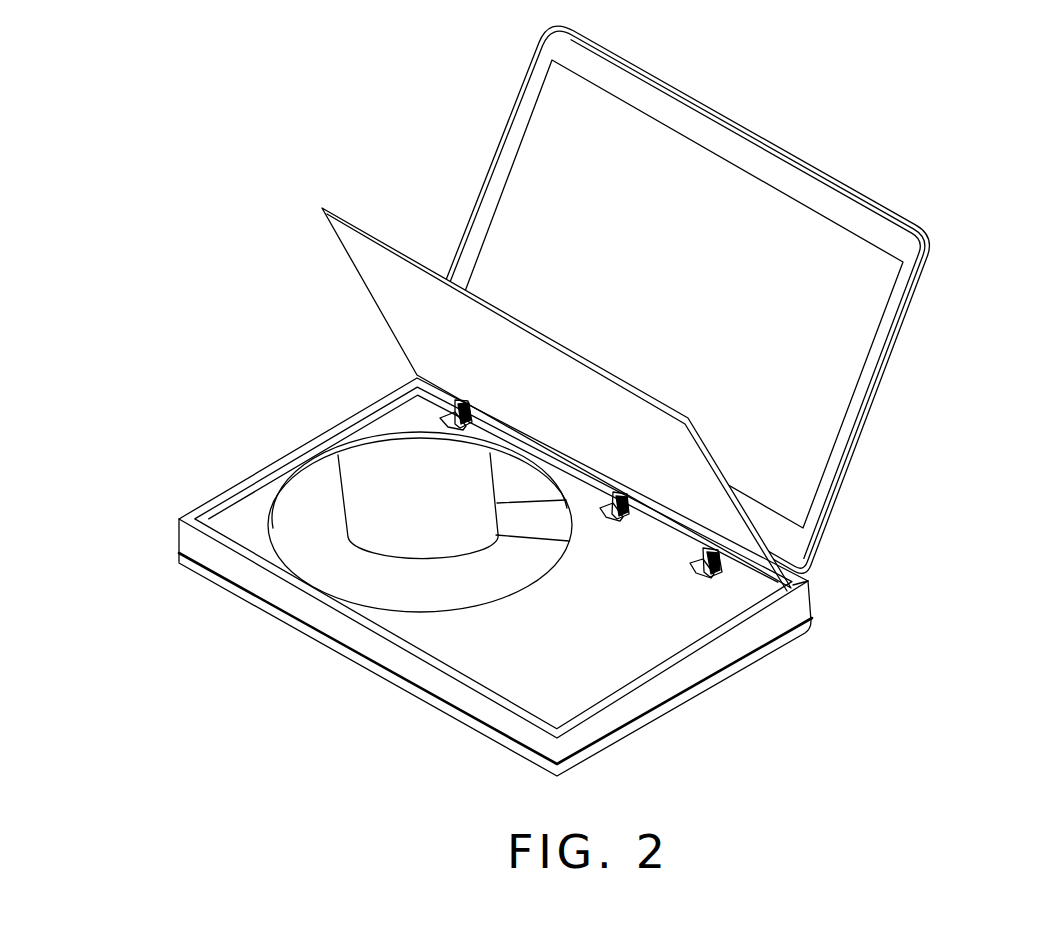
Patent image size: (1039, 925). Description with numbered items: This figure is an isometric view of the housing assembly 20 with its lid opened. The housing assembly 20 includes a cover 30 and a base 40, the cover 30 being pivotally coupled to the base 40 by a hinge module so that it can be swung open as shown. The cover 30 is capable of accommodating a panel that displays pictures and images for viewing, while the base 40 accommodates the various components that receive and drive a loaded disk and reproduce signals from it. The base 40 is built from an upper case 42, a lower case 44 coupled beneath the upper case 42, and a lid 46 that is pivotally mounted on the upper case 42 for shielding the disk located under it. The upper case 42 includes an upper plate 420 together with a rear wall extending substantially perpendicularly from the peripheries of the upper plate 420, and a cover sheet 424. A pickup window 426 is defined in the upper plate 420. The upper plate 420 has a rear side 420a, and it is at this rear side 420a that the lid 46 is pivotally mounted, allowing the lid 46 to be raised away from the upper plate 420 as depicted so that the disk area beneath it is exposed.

The housing assembly 20 is at (805, 60).
The cover 30 is at (921, 226).
The base 40 is at (550, 577).
The upper case 42 is at (330, 623).
The lower case 44 is at (240, 593).
The lid 46 is at (352, 242).
The upper plate 420 is at (708, 617).
The rear side 420a is at (802, 586).
The cover sheet 424 is at (522, 525).
The pickup window 426 is at (355, 505).